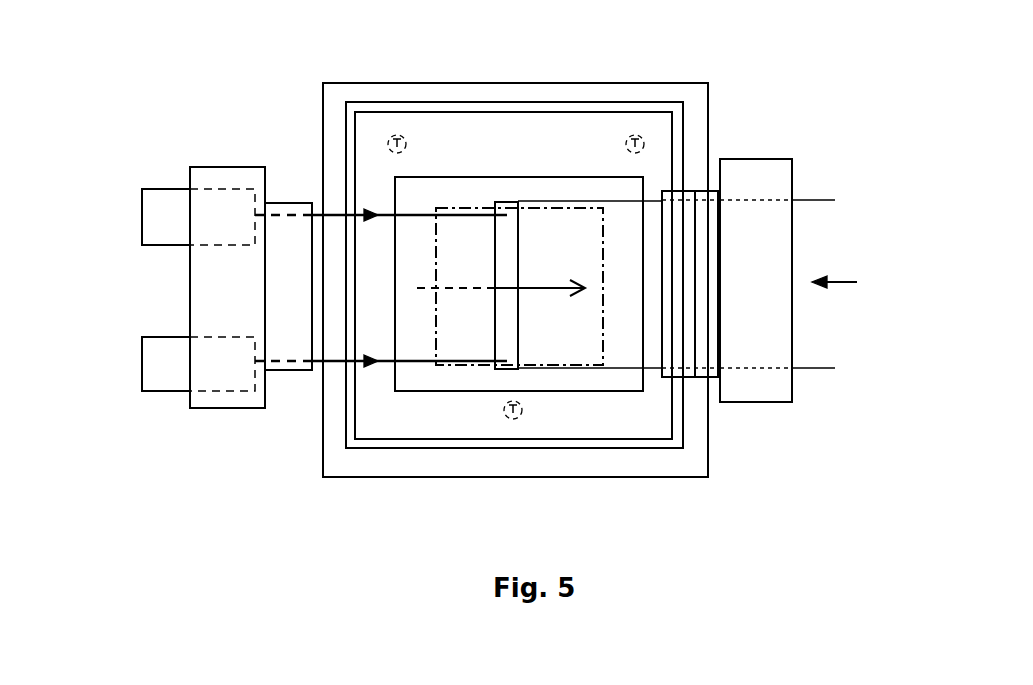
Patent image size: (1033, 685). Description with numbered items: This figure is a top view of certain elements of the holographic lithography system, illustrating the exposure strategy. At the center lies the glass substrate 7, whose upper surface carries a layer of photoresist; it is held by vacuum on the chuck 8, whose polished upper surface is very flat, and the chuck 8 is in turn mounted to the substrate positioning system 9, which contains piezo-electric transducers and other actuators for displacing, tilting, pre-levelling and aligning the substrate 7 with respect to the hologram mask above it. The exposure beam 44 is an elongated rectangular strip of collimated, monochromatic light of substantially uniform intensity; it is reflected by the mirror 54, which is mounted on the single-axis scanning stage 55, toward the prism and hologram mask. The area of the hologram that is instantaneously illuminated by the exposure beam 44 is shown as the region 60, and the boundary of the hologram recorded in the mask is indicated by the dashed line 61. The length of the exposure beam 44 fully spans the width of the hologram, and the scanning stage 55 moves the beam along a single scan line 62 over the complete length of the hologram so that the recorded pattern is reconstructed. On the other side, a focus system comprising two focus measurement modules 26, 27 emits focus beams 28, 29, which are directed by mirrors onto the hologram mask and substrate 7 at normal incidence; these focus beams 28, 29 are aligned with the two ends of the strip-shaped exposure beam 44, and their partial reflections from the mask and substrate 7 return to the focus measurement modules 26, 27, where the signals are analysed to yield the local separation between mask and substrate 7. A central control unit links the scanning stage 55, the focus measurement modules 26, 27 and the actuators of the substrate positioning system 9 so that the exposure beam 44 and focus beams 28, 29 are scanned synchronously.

The glass substrate 7 is at (496, 125).
The vacuum chuck 8 is at (428, 100).
The substrate positioning system 9 is at (608, 86).
The focus measurement module 26 is at (142, 378).
The focus measurement module 27 is at (142, 225).
The focus beam 28 is at (318, 365).
The focus beam 29 is at (318, 215).
The exposure beam 44 is at (856, 286).
The mirror 54 is at (685, 191).
The single-axis scanning stage 55 is at (775, 402).
The instantaneously illuminated hologram area 60 is at (506, 369).
The hologram boundary 61 is at (604, 353).
The scan line 62 is at (543, 287).